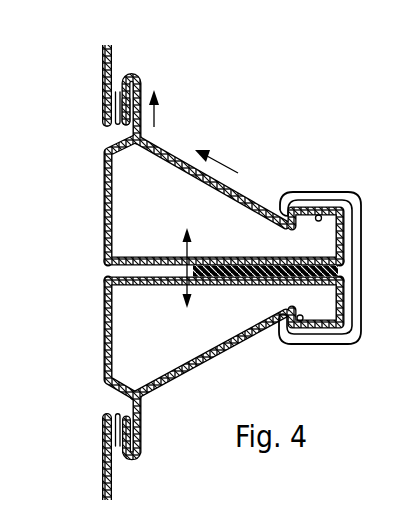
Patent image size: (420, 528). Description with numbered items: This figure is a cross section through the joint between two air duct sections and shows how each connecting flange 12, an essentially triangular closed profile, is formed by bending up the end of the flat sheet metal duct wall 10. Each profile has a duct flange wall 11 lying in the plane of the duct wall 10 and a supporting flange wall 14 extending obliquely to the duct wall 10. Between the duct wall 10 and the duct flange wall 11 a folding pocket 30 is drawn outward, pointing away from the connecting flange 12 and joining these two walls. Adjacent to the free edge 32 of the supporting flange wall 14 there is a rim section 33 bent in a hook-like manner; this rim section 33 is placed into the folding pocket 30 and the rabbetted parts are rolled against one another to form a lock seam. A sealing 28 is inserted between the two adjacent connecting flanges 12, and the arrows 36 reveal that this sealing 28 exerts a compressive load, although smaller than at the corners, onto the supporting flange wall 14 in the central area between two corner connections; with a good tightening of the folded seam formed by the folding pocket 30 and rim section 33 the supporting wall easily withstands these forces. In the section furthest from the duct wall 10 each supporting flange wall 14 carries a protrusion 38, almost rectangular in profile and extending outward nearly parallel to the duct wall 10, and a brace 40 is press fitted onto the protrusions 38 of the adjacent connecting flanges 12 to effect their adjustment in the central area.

The duct wall 10 is at (112, 55).
The duct flange wall 11 is at (103, 212).
The connecting flange 12 is at (97, 292).
The supporting flange wall 14 is at (181, 378).
The sealing 28 is at (232, 268).
The folding pocket 30 is at (112, 128).
The free edge 32 is at (112, 111).
The rim section 33 is at (112, 100).
The arrows 36 is at (192, 246).
The protrusion 38 is at (301, 322).
The brace 40 is at (351, 345).